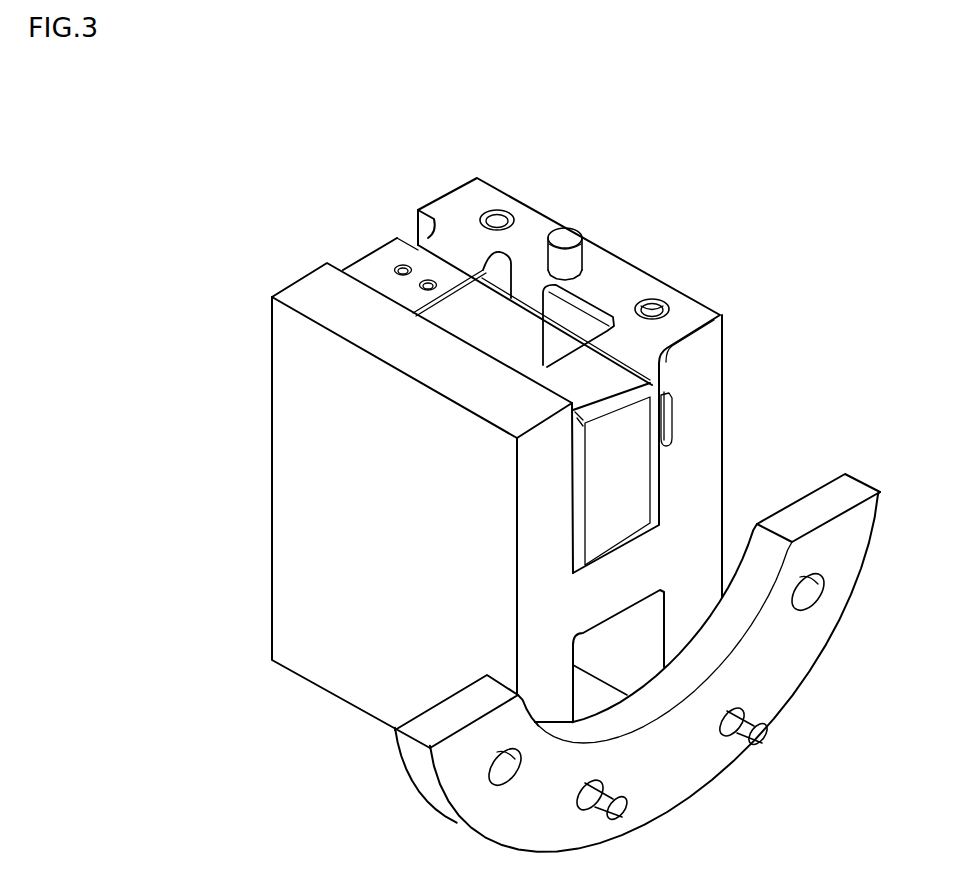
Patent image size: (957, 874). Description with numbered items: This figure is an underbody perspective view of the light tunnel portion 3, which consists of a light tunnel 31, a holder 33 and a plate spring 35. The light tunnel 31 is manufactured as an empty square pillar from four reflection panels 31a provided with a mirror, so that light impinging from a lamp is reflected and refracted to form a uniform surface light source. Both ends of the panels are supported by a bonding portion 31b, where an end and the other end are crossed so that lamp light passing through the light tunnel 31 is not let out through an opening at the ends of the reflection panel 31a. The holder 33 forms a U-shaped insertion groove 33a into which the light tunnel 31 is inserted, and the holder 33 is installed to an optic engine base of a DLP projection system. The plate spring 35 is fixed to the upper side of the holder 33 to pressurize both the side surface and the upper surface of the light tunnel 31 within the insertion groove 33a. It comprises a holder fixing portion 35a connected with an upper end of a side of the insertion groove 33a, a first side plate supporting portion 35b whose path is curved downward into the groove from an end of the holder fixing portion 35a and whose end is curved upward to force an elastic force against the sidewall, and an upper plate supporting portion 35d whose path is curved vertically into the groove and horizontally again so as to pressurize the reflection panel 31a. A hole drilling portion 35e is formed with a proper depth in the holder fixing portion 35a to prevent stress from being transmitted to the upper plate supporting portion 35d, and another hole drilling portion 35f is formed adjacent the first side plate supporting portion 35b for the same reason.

The light tunnel portion 3 is at (212, 288).
The holder 33 is at (731, 441).
The insertion groove 33a is at (412, 235).
The light tunnel 31 is at (656, 541).
The reflection panel 31a is at (673, 418).
The bonding portion 31b is at (672, 395).
The plate spring 35 is at (457, 168).
The holder fixing portion 35a is at (692, 310).
The first side plate supporting portion 35b is at (636, 340).
The upper plate supporting portion 35d is at (385, 273).
The hole drilling portion 35e is at (501, 245).
The hole drilling portion 35f is at (523, 280).